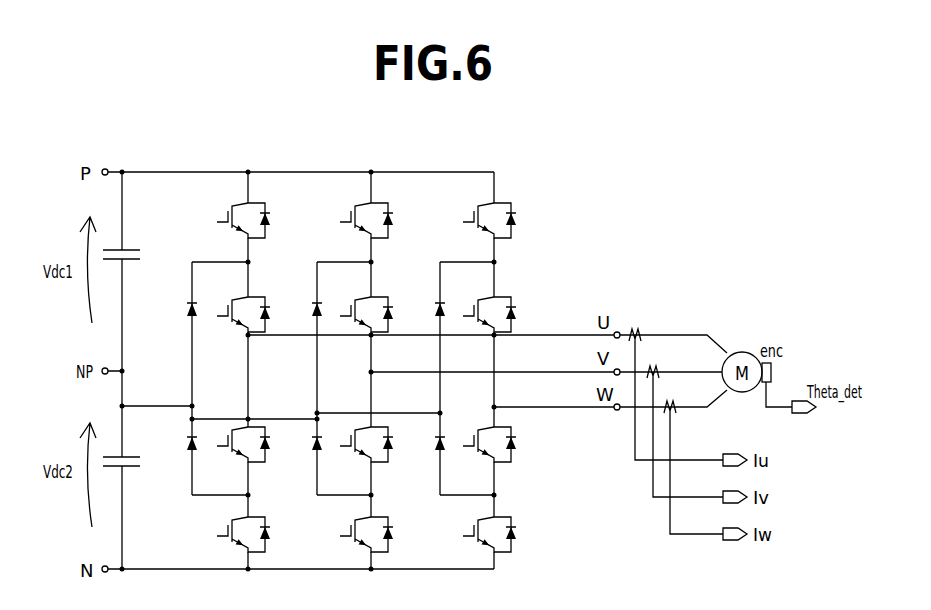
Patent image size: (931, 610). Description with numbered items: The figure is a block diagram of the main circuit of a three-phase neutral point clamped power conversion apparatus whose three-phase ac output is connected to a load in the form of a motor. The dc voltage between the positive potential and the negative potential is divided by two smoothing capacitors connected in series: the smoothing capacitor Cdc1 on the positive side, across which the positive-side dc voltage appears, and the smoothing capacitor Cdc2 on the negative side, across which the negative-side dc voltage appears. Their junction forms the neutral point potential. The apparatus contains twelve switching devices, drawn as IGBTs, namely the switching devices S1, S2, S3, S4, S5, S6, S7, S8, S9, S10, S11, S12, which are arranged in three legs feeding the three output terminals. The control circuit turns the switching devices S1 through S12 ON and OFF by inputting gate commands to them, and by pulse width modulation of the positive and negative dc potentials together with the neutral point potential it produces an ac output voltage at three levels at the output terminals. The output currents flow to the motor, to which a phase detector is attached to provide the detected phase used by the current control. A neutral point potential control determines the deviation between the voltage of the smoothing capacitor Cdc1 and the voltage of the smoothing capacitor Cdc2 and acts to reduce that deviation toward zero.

The switching device S1 is at (266, 203).
The switching device S2 is at (261, 297).
The switching device S3 is at (260, 462).
The switching device S4 is at (266, 552).
The switching device S5 is at (389, 204).
The switching device S6 is at (384, 297).
The switching device S7 is at (385, 462).
The switching device S8 is at (388, 552).
The switching device S9 is at (512, 206).
The switching device S10 is at (512, 299).
The switching device S11 is at (512, 430).
The switching device S12 is at (512, 520).
The smoothing capacitor Cdc1 is at (136, 240).
The smoothing capacitor Cdc2 is at (136, 450).